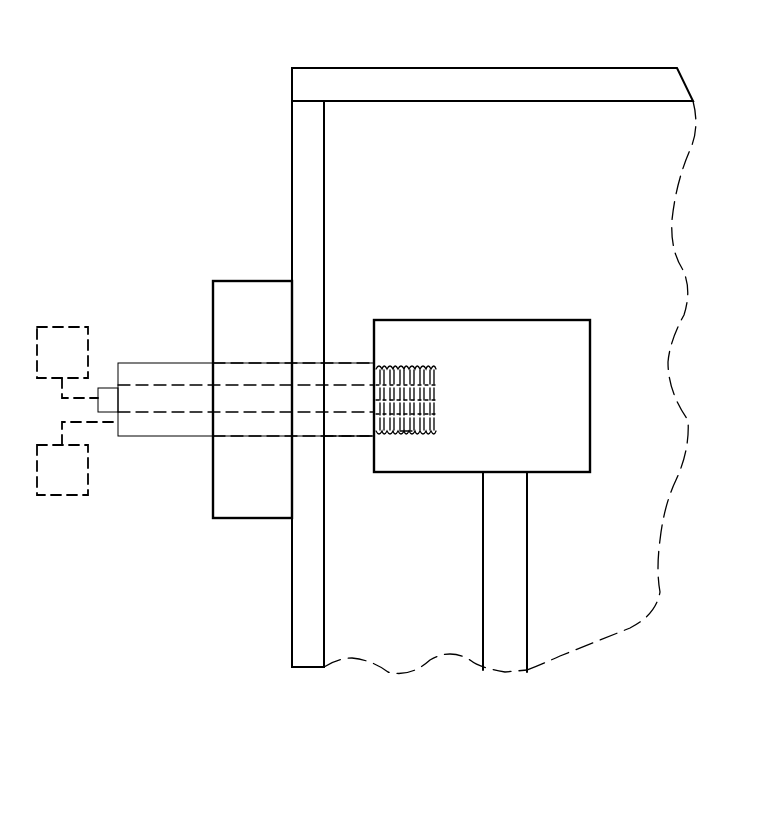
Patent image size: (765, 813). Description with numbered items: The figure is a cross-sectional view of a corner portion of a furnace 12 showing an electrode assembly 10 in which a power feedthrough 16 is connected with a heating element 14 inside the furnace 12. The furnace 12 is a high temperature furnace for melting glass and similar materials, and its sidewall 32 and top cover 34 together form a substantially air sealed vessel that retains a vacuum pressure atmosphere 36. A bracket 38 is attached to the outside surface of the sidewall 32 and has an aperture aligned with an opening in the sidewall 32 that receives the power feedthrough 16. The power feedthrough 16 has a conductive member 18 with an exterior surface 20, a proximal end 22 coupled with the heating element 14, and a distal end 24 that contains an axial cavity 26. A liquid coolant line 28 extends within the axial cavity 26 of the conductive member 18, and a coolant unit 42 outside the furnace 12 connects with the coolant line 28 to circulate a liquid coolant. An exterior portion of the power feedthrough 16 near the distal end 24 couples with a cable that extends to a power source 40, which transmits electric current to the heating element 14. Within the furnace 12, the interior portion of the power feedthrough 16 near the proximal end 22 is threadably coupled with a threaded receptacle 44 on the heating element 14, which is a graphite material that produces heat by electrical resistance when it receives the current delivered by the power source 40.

The electrode assembly 10 is at (188, 176).
The furnace 12 is at (643, 136).
The heating element 14 is at (575, 390).
The power feedthrough 16 is at (186, 339).
The conductive member 18 is at (252, 423).
The exterior surface 20 is at (357, 437).
The proximal end 22 is at (437, 380).
The distal end 24 is at (118, 372).
The axial cavity 26 is at (168, 418).
The liquid coolant line 28 is at (108, 398).
The sidewall 32 is at (310, 162).
The top cover 34 is at (401, 85).
The vacuum pressure atmosphere 36 is at (466, 187).
The bracket 38 is at (258, 298).
The power source 40 is at (50, 484).
The coolant unit 42 is at (50, 366).
The threaded receptacle 44 is at (404, 435).